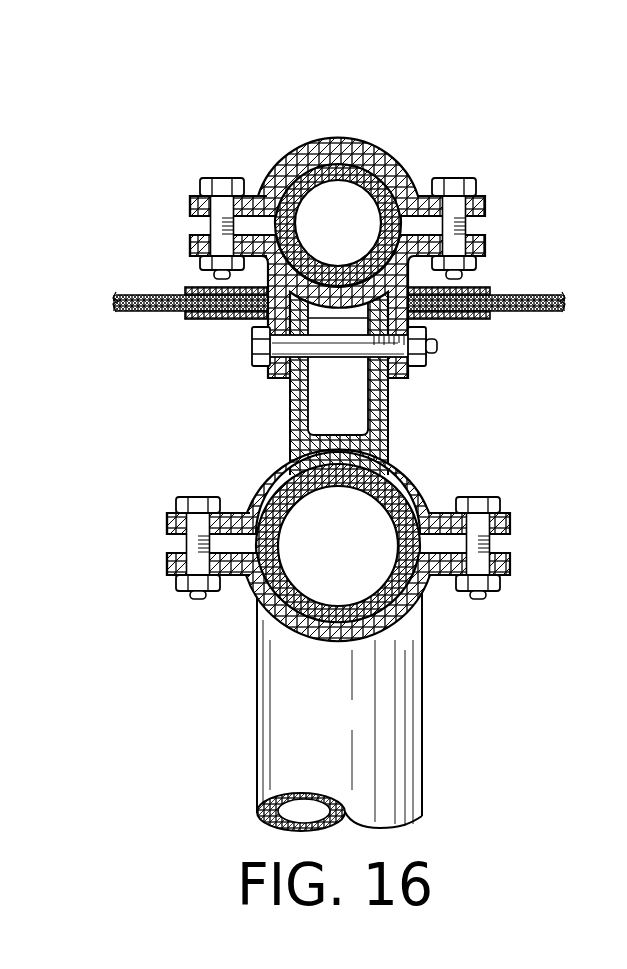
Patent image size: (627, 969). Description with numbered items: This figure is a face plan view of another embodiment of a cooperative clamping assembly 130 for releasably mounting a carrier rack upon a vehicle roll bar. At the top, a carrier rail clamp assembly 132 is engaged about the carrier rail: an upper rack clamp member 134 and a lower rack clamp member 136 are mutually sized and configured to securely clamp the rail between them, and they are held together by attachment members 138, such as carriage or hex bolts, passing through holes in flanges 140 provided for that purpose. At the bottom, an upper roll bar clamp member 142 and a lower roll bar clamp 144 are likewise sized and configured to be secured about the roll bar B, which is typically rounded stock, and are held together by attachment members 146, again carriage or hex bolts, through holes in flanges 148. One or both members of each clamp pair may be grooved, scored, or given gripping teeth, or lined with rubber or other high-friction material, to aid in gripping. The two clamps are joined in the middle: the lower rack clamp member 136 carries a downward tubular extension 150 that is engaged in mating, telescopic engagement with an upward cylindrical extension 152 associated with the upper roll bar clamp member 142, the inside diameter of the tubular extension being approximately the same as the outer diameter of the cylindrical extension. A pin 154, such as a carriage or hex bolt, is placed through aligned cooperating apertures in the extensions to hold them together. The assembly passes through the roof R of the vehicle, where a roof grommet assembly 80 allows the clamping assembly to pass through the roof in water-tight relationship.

The cooperative clamping assembly 130 is at (329, 260).
The carrier rail clamp assembly 132 is at (367, 173).
The upper rack clamp member 134 is at (322, 150).
The lower rack clamp member 136 is at (482, 243).
The attachment members 138 is at (222, 177).
The flanges 140 is at (192, 244).
The upper roll bar clamp member 142 is at (408, 476).
The lower roll bar clamp 144 is at (260, 592).
The attachment members 146 is at (199, 496).
The flanges 148 is at (169, 565).
The downward tubular extension 150 is at (410, 378).
The upward cylindrical extension 152 is at (294, 405).
The pin 154 is at (252, 346).
The roof grommet assembly 80 is at (303, 510).
The roof R is at (520, 304).
The roll bar B is at (390, 717).